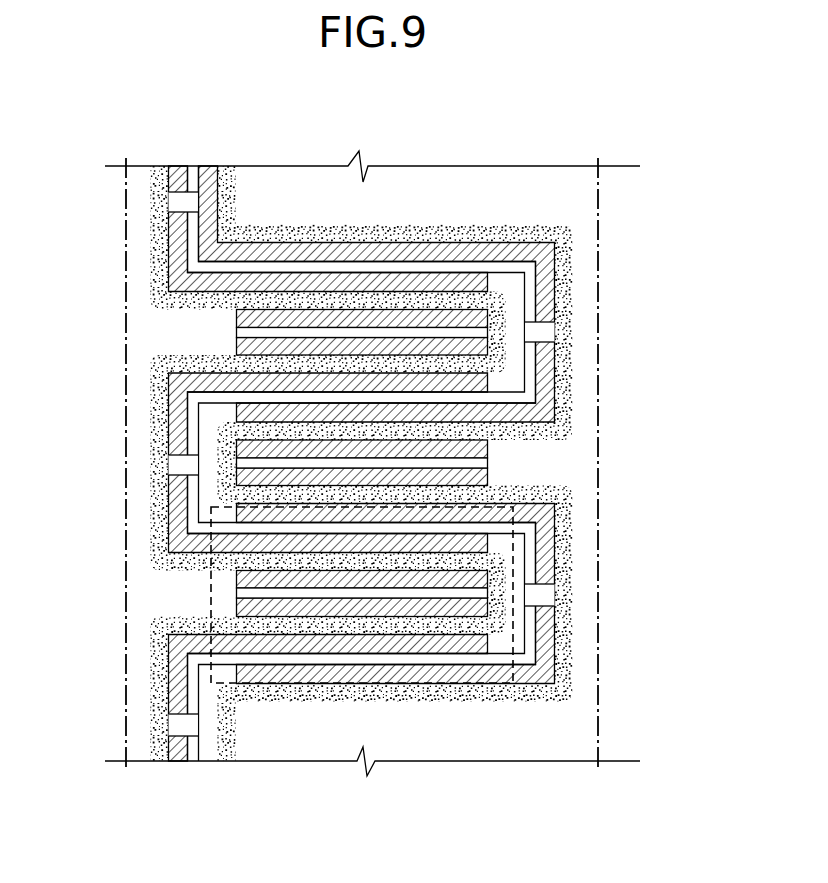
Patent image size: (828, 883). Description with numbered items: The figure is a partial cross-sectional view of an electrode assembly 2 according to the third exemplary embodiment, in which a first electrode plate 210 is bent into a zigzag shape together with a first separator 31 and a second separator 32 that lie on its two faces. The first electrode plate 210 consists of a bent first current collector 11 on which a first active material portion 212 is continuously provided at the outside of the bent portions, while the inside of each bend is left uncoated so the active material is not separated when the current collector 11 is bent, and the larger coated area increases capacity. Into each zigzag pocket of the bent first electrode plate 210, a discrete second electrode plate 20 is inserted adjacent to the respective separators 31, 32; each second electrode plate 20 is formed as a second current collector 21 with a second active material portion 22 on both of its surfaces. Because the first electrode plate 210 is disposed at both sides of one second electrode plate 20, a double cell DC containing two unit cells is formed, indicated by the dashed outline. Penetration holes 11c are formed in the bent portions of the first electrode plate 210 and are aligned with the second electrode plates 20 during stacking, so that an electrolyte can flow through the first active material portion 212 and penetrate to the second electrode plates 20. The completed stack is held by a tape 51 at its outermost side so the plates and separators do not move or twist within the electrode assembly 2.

The electrode assembly 2 is at (419, 113).
The first current collector 11 is at (410, 658).
The penetration hole 11c is at (178, 203).
The second electrode plate 20 is at (362, 594).
The second current collector 21 is at (343, 593).
The second active material portion 22 is at (315, 578).
The first separator 31 is at (161, 768).
The second separator 32 is at (234, 768).
The tape 51 is at (600, 642).
The first electrode plate 210 is at (362, 522).
The first active material portion 212 is at (467, 648).
The double cell DC is at (210, 600).